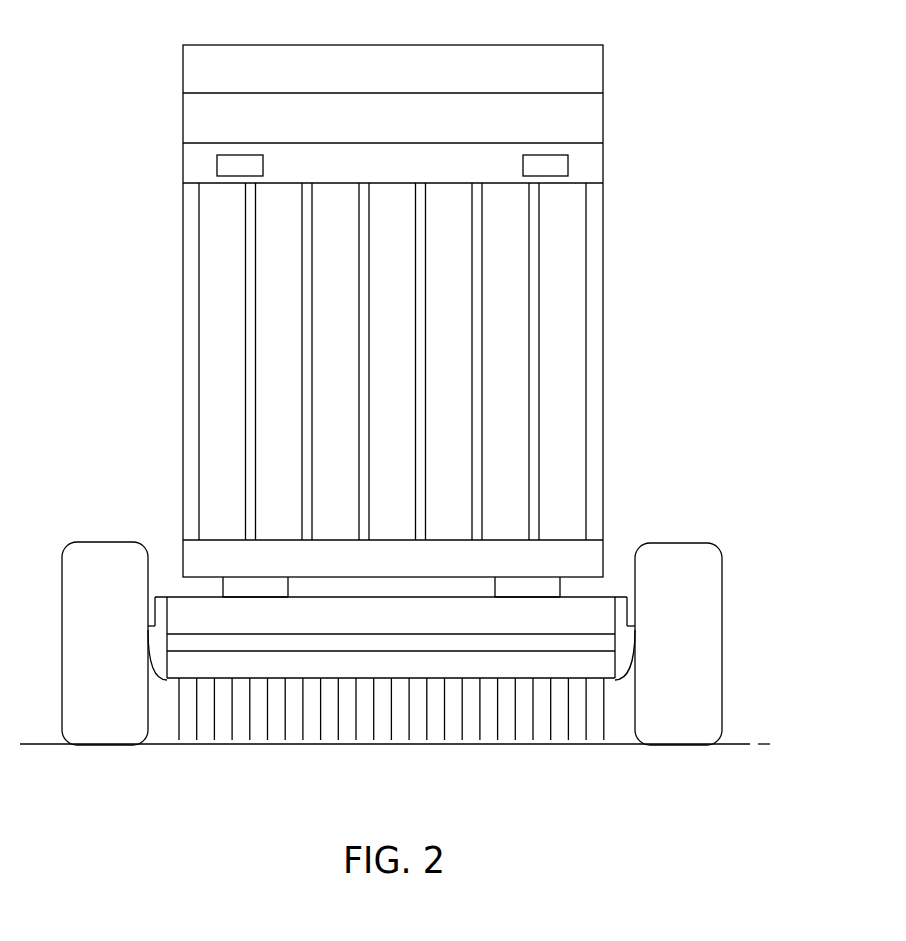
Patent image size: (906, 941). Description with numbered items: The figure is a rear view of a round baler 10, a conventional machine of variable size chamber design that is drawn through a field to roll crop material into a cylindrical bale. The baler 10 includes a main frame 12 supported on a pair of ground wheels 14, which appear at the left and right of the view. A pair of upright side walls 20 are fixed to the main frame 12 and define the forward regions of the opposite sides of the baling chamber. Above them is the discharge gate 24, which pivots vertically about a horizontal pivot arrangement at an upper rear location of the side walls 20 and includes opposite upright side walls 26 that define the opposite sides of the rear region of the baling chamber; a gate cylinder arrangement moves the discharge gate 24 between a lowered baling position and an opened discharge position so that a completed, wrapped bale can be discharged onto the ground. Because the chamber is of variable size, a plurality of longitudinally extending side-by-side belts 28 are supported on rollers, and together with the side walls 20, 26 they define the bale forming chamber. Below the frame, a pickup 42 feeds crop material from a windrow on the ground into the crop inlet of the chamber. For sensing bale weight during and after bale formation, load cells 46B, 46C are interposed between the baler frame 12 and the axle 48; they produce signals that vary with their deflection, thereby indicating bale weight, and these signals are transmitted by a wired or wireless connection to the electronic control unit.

The round baler 10 is at (680, 233).
The main frame 12 is at (600, 558).
The ground wheels 14 is at (83, 542).
The upright side walls 20 is at (183, 327).
The discharge gate 24 is at (565, 104).
The side walls of the discharge gate 26 is at (183, 120).
The belts 28 is at (517, 393).
The pickup 42 is at (267, 720).
The load cell 46B is at (267, 598).
The load cell 46C is at (518, 598).
The axle 48 is at (402, 629).